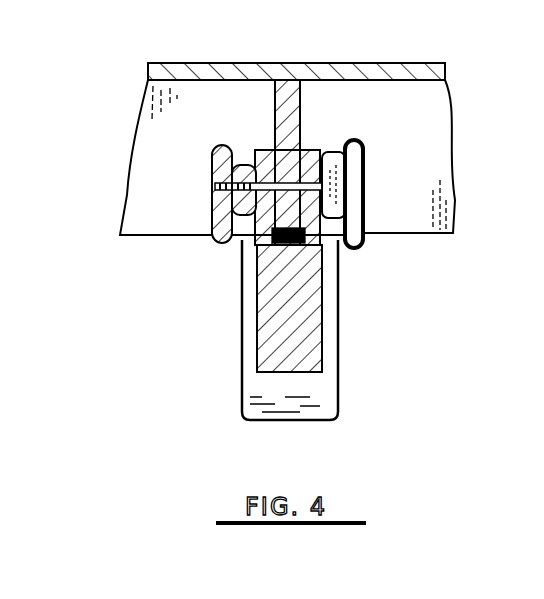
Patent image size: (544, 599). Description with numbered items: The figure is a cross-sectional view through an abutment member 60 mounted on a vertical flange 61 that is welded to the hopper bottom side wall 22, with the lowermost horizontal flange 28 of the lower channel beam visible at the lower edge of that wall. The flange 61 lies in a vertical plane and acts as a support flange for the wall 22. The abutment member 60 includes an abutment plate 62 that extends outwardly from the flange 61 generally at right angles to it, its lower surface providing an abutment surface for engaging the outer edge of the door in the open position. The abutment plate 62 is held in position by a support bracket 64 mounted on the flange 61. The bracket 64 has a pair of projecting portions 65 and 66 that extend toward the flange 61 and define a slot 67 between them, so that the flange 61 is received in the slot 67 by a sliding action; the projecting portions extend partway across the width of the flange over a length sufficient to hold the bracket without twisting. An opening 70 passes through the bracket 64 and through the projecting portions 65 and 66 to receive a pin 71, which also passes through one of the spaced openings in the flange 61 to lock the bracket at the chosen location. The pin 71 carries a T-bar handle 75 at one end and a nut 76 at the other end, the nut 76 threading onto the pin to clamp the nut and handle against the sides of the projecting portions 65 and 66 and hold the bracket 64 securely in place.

The hopper bottom side wall 22 is at (237, 62).
The lowermost horizontal flange 28 is at (437, 113).
The abutment member 60 is at (363, 308).
The flange 61 is at (303, 104).
The abutment plate 62 is at (324, 396).
The support bracket 64 is at (275, 316).
The projecting portion 65 is at (250, 151).
The projecting portion 66 is at (352, 147).
The slot 67 is at (313, 153).
The opening 70 is at (248, 232).
The pin 71 is at (216, 192).
The T-bar handle 75 is at (363, 205).
The nut 76 is at (210, 224).